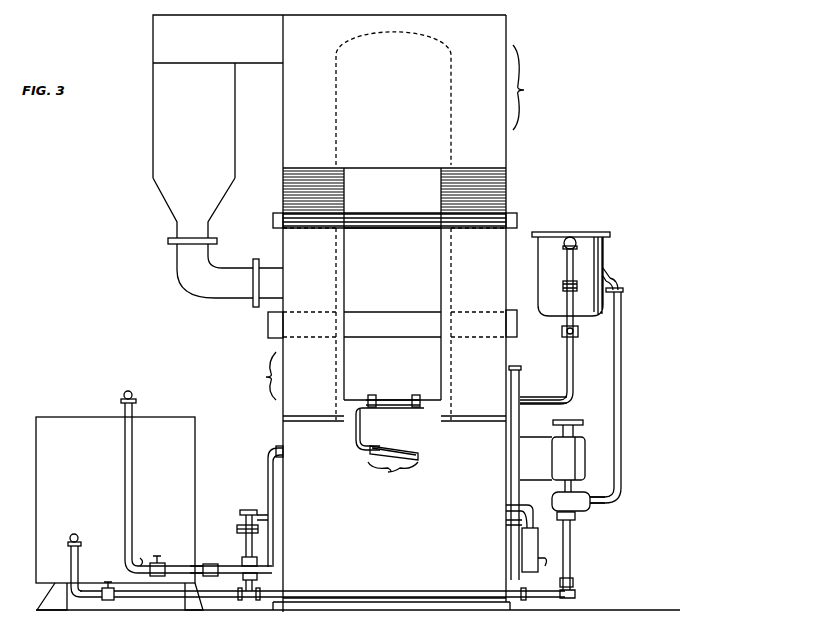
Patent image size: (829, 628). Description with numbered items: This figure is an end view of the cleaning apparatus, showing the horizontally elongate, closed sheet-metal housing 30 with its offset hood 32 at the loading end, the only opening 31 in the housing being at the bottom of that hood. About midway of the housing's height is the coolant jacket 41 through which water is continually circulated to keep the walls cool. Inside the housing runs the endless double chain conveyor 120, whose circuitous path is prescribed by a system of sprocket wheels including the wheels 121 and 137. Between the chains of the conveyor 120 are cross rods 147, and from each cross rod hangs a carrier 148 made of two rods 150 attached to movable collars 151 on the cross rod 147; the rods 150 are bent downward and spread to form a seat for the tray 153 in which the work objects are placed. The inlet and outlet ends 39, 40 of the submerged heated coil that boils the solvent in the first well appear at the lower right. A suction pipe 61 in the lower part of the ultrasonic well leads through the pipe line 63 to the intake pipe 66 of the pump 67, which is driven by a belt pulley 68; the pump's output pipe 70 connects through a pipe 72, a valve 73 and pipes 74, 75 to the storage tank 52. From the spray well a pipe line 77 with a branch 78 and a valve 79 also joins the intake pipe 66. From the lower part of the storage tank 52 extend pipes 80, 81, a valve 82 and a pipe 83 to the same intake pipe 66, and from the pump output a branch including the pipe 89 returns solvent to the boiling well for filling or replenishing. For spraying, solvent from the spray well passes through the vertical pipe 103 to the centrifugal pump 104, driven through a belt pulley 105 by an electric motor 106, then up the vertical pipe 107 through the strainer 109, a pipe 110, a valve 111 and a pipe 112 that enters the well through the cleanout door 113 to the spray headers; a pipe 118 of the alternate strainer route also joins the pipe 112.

The housing 30 is at (531, 87).
The opening 31 is at (388, 180).
The offset hood 32 is at (258, 376).
The inlet end of heated coil 39 is at (538, 542).
The outlet end of heated coil 40 is at (547, 562).
The jacket 41 is at (268, 328).
The storage tank 52 is at (68, 417).
The suction pipe 61 is at (533, 508).
The pipe line 63 is at (388, 591).
The intake pipe 66 is at (210, 564).
The pump 67 is at (243, 578).
The belt pulley 68 is at (240, 522).
The output pipe 70 is at (236, 528).
The pipe 72 is at (181, 566).
The valve 73 is at (158, 556).
The pipe 74 is at (146, 558).
The pipe 75 is at (132, 440).
The pipe line 77 is at (570, 550).
The branch 78 is at (575, 598).
The valve 79 is at (573, 577).
The pipe 80 is at (71, 568).
The pipe 81 is at (96, 597).
The valve 82 is at (106, 582).
The pipe 83 is at (130, 597).
The pipe 89 is at (268, 472).
The vertical pipe 103 is at (575, 518).
The centrifugal pump 104 is at (575, 498).
The belt pulley 105 is at (583, 422).
The electric motor 106 is at (552, 468).
The vertical pipe 107 is at (621, 325).
The strainer 109 is at (552, 232).
The pipe 110 is at (567, 264).
The valve 111 is at (563, 285).
The pipe 112 is at (548, 397).
The cleanout door 113 is at (520, 368).
The pipe 118 is at (562, 331).
The endless double chain conveyor 120 is at (336, 270).
The sprocket wheel 121 is at (330, 422).
The sprocket wheel 137 is at (393, 40).
The cross rod 147 is at (393, 400).
The carrier 148 is at (393, 478).
The rod 150 is at (360, 429).
The movable collar 151 is at (416, 395).
The tray 153 is at (390, 452).